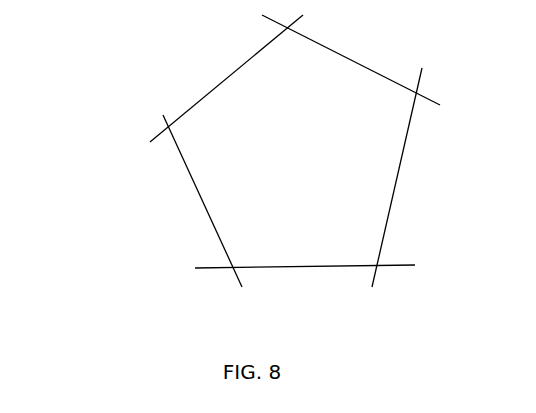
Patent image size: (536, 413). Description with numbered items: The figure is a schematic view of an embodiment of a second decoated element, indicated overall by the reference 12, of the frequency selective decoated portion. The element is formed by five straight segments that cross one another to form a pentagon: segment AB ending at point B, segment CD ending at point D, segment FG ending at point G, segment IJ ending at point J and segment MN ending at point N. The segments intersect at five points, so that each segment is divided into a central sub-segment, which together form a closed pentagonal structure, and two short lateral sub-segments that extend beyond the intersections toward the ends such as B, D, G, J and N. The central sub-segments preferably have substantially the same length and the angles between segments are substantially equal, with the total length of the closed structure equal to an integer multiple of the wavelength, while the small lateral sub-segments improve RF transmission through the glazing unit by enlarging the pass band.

The pentagon formed by intersecting line segments 12 is at (110, 44).
The segment endpoint D is at (214, 89).
The segment endpoint G is at (339, 53).
The segment endpoint J is at (404, 167).
The segment endpoint N is at (289, 268).
The segment endpoint B is at (195, 185).